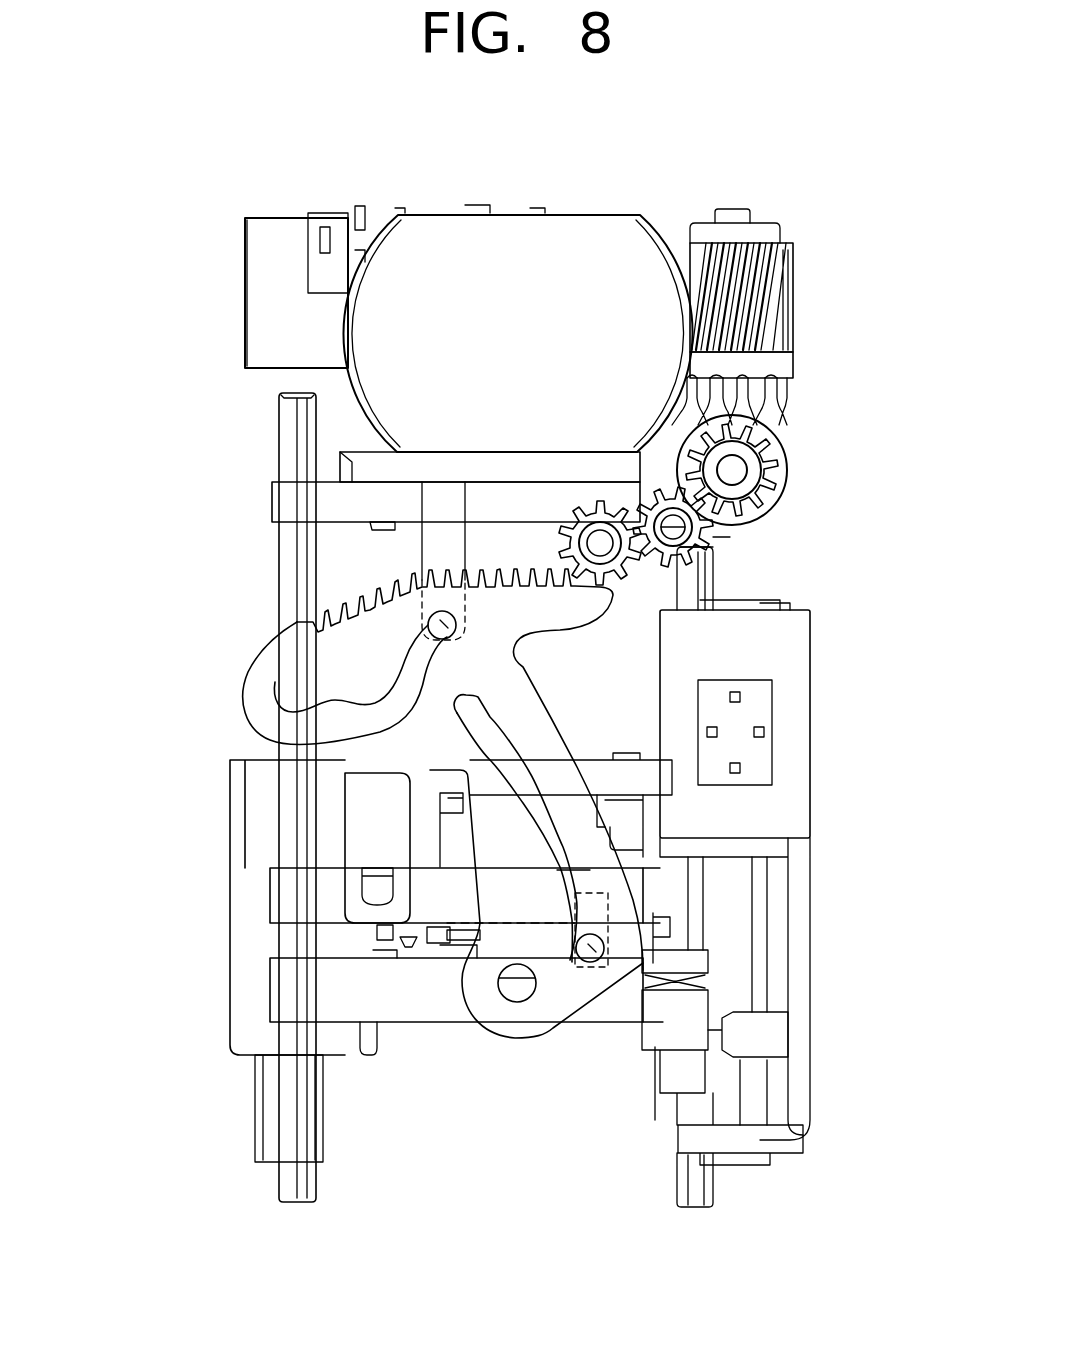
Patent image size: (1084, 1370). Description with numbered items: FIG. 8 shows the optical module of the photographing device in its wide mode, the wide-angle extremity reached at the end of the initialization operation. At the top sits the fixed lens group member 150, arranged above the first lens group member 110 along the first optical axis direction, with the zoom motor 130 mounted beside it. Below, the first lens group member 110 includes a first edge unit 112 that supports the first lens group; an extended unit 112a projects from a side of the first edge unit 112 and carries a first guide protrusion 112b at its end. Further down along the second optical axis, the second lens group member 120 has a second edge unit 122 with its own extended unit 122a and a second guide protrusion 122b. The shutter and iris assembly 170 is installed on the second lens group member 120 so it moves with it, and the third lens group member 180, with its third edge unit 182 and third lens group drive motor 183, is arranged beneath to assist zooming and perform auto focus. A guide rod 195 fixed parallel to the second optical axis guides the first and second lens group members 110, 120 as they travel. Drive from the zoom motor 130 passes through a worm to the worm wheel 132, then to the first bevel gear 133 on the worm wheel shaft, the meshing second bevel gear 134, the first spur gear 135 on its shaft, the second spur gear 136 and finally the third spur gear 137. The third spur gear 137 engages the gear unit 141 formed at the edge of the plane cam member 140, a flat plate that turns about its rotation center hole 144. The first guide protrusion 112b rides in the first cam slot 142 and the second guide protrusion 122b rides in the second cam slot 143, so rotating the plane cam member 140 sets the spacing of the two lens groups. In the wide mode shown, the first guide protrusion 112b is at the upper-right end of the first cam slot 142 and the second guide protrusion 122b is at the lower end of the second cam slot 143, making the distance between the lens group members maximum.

The first lens group member 110 is at (359, 532).
The first edge unit 112 is at (300, 495).
The extended unit 112a is at (440, 505).
The first guide protrusion 112b is at (440, 612).
The second lens group member 120 is at (262, 898).
The second edge unit 122 is at (433, 903).
The extended unit 122a is at (577, 897).
The second guide protrusion 122b is at (590, 963).
The zoom motor 130 is at (280, 237).
The worm wheel 132 is at (780, 292).
The first bevel gear 133 is at (790, 392).
The second bevel gear 134 is at (776, 448).
The first spur gear 135 is at (778, 478).
The second spur gear 136 is at (722, 532).
The third spur gear 137 is at (700, 567).
The plane cam member 140 is at (354, 735).
The gear unit 141 is at (560, 522).
The first cam slot 142 is at (412, 675).
The second cam slot 143 is at (470, 727).
The rotation center hole 144 is at (513, 1037).
The fixed lens group member 150 is at (596, 237).
The shutter and iris assembly 170 is at (225, 832).
The third lens group member 180 is at (262, 985).
The third edge unit 182 is at (365, 1003).
The third lens group drive motor 183 is at (812, 800).
The guide rod 195 is at (725, 588).